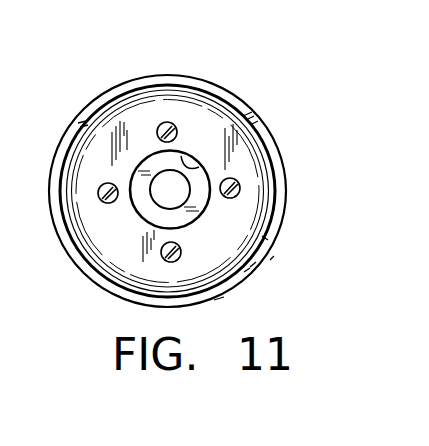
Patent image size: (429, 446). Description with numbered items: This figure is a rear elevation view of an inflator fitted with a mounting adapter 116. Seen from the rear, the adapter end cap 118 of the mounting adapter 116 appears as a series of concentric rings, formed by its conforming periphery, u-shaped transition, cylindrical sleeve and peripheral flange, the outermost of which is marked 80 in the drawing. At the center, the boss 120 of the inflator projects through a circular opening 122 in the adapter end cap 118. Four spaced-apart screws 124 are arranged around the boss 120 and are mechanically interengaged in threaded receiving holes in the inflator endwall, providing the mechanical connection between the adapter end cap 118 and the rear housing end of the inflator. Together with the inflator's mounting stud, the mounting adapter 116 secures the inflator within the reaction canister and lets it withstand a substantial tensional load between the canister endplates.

The housing ring 80 is at (240, 287).
The mounting adapter 116 is at (290, 187).
The adapter end cap 118 is at (217, 112).
The boss 120 is at (147, 208).
The opening 122 is at (199, 167).
The screws 124 is at (171, 122).